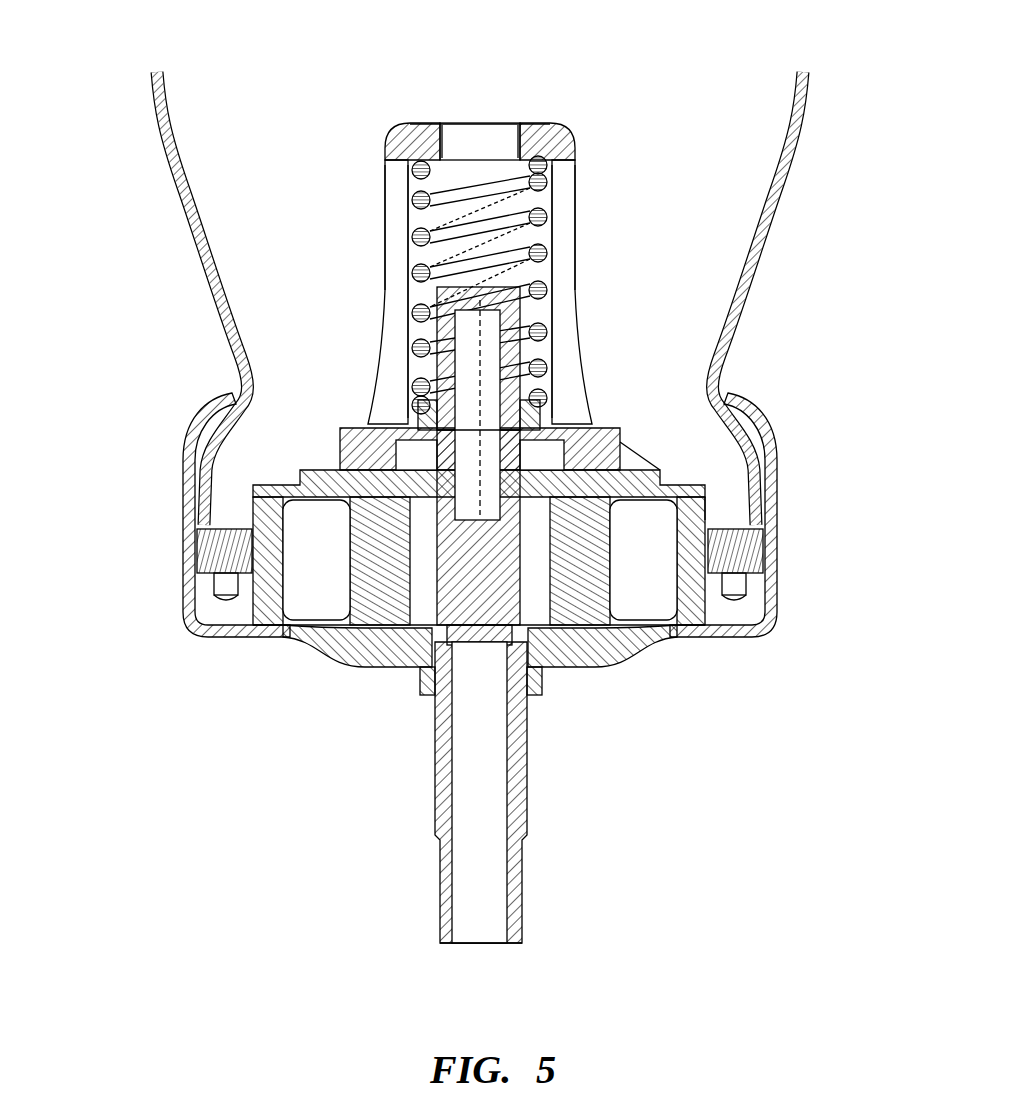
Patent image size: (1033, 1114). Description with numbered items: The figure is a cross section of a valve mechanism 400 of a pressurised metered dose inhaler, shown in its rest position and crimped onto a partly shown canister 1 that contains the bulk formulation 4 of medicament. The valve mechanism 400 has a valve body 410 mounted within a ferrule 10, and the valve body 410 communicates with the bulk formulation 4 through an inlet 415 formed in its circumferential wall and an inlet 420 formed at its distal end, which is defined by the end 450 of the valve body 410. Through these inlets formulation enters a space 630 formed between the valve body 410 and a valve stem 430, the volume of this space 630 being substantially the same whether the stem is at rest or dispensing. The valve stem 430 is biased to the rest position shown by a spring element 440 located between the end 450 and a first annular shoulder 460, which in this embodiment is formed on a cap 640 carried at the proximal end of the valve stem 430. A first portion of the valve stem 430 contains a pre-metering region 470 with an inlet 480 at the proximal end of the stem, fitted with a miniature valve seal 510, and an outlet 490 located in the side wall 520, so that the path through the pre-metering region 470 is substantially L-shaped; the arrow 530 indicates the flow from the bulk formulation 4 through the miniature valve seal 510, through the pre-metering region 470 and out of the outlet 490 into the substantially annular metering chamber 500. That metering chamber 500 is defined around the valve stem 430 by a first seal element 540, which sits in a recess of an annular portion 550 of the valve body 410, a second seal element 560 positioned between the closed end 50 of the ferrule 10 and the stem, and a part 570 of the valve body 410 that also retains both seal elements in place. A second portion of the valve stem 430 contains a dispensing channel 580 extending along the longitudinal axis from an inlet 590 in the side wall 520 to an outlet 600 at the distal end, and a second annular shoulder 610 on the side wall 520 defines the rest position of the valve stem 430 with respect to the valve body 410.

The canister 1 is at (760, 258).
The bulk formulation 4 is at (312, 310).
The ferrule 10 is at (778, 605).
The closed end 50 is at (360, 668).
The valve mechanism 400 is at (594, 104).
The valve body 410 is at (392, 150).
The inlet 415 is at (388, 200).
The inlet 420 is at (498, 142).
The valve stem 430 is at (500, 592).
The spring element 440 is at (540, 218).
The end 450 is at (523, 110).
The first annular shoulder 460 is at (560, 445).
The pre-metering region 470 is at (493, 380).
The inlet 480 is at (468, 288).
The outlet 490 is at (707, 523).
The metering chamber 500 is at (420, 588).
The miniature valve seal 510 is at (468, 288).
The side wall 520 is at (428, 548).
The arrow 530 is at (484, 241).
The first seal element 540 is at (413, 433).
The annular portion 550 is at (612, 440).
The second seal element 560 is at (332, 668).
The part 570 is at (588, 583).
The dispensing channel 580 is at (490, 768).
The inlet 590 is at (435, 700).
The outlet 600 is at (482, 948).
The second annular shoulder 610 is at (548, 668).
The space 630 is at (400, 430).
The cap 640 is at (510, 300).